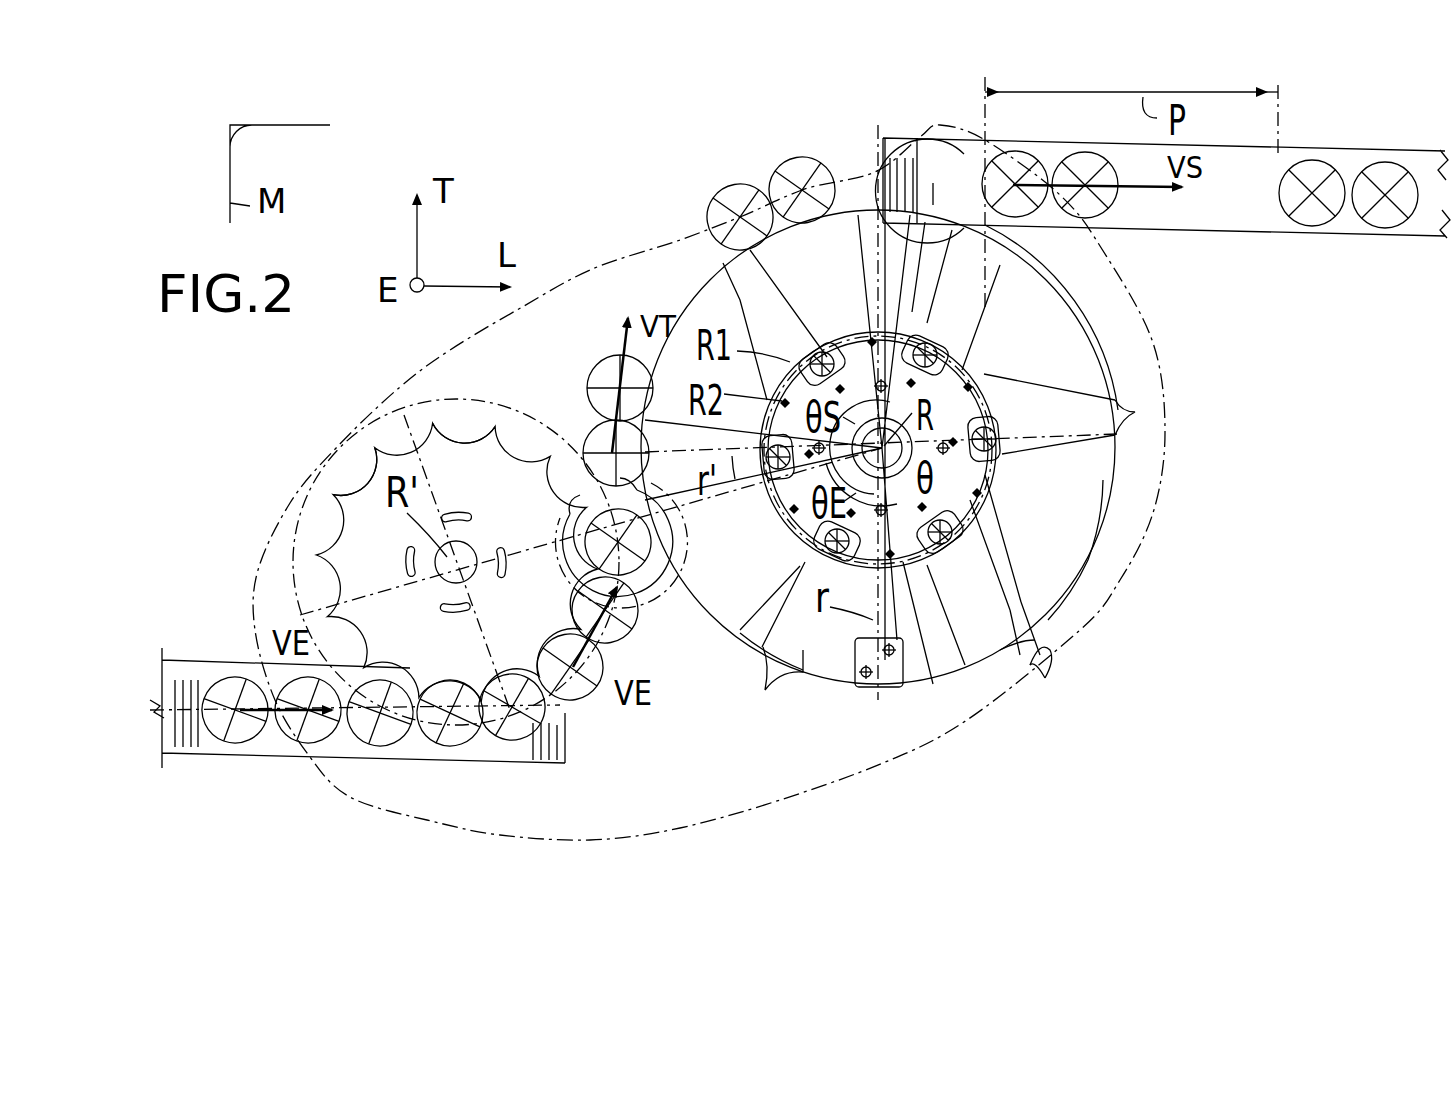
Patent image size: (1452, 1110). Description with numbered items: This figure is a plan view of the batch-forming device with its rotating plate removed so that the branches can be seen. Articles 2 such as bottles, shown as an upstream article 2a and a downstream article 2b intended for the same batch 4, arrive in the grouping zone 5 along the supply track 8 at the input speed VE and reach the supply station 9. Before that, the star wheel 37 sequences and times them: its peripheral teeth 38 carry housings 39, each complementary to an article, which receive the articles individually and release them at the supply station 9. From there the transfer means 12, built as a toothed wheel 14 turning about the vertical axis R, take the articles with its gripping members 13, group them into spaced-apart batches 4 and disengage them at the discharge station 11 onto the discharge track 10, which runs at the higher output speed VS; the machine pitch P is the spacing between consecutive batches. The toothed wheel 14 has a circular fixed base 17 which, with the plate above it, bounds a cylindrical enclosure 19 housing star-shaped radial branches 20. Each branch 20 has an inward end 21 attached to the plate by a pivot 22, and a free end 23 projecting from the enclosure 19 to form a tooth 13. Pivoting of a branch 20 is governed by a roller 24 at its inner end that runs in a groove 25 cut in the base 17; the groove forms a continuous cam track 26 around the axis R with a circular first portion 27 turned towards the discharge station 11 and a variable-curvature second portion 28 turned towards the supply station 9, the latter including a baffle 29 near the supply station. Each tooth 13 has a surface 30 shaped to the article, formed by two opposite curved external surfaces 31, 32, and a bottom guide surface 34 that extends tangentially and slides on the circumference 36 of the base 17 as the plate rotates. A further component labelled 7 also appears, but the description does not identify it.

The articles 2 is at (226, 740).
The upstream article 2a is at (722, 192).
The downstream article 2b is at (793, 158).
The batches 4 is at (742, 172).
The grouping zone 5 is at (725, 828).
The transfer device 7 is at (748, 735).
The supply track 8 is at (218, 663).
The supply station 9 is at (655, 595).
The discharge track 10 is at (1365, 243).
The discharge station 11 is at (938, 127).
The transfer means 12 is at (975, 447).
The gripping members (teeth) 13 is at (1197, 393).
The toothed wheel 14 is at (1120, 487).
The circular fixed base 17 is at (1092, 576).
The cylindrical enclosure 19 is at (1070, 521).
The radial branches 20 is at (960, 305).
The inward end 21 is at (952, 512).
The pivot 22 is at (825, 348).
The free end 23 is at (1133, 412).
The roller 24 is at (783, 523).
The groove 25 is at (945, 562).
The cam track 26 is at (984, 490).
The first portion 27 is at (968, 365).
The second portion 28 is at (925, 668).
The baffle 29 is at (797, 570).
The surface 30 is at (1038, 662).
The external surface 31 is at (1070, 645).
The external surface 32 is at (1035, 640).
The bottom guide surface 34 is at (803, 672).
The circumference of the base 36 is at (1098, 318).
The star wheel 37 is at (345, 538).
The teeth of the star wheel 38 is at (370, 437).
The housings 39 is at (455, 430).